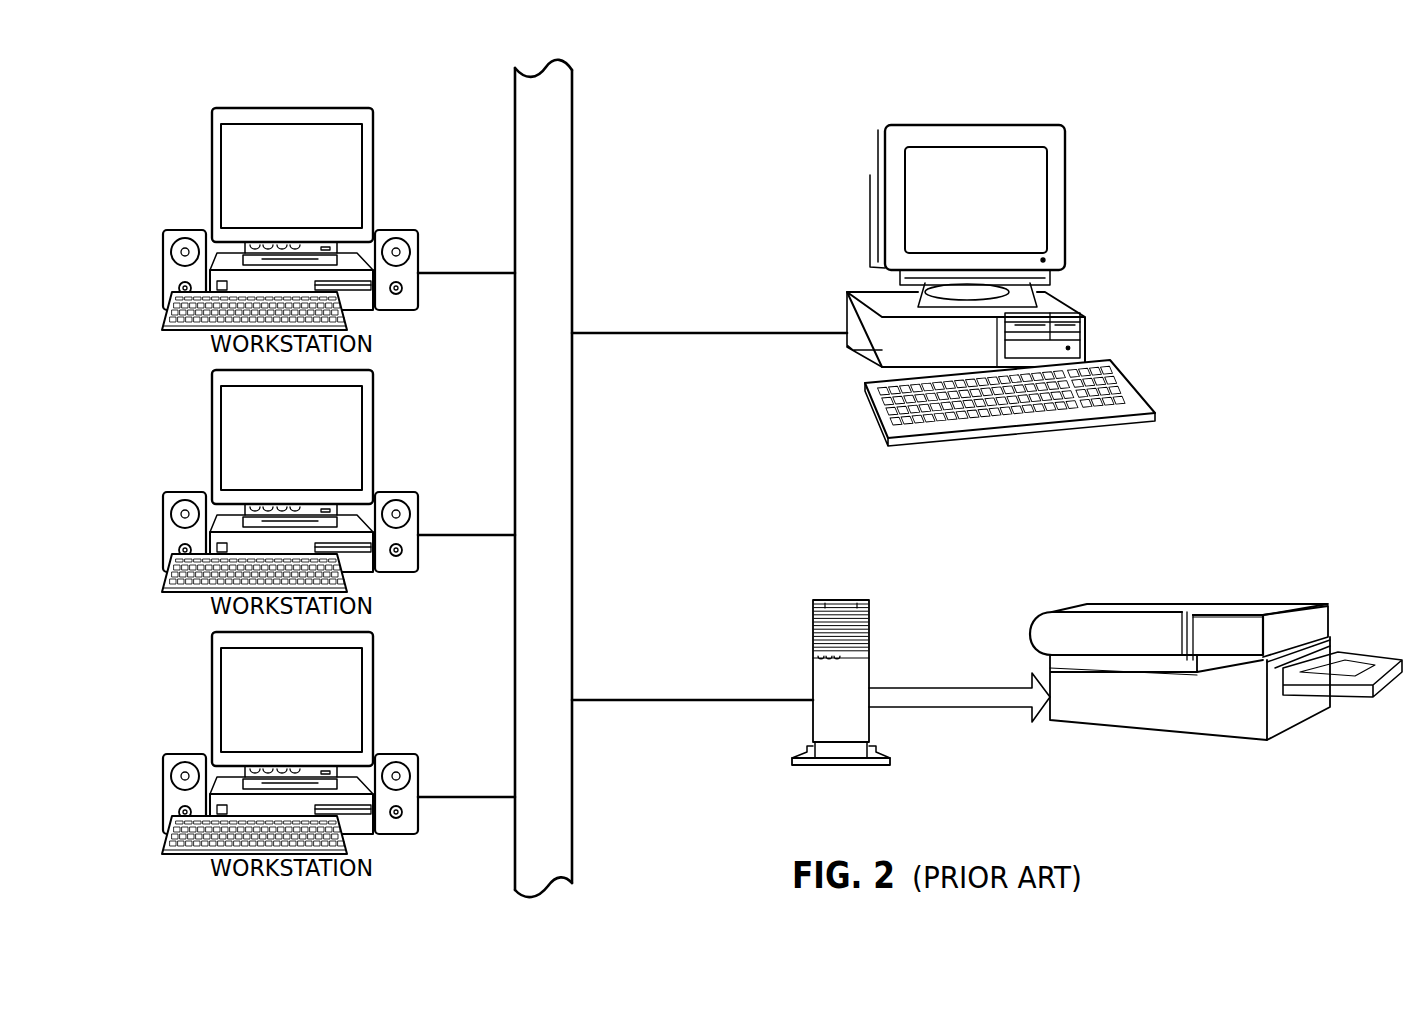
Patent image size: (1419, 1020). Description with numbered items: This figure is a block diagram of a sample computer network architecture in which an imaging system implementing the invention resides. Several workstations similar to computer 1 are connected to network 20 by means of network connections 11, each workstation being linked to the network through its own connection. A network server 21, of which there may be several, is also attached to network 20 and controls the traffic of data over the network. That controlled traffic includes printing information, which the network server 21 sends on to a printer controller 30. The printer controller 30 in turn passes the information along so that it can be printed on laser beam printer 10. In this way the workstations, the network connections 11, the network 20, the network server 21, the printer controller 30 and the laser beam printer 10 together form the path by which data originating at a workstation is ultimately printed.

The computer 1 is at (290, 494).
The network connection 11 is at (492, 272).
The network 20 is at (572, 172).
The network server 21 is at (864, 292).
The printer controller 30 is at (837, 600).
The laser beam printer 10 is at (1155, 604).